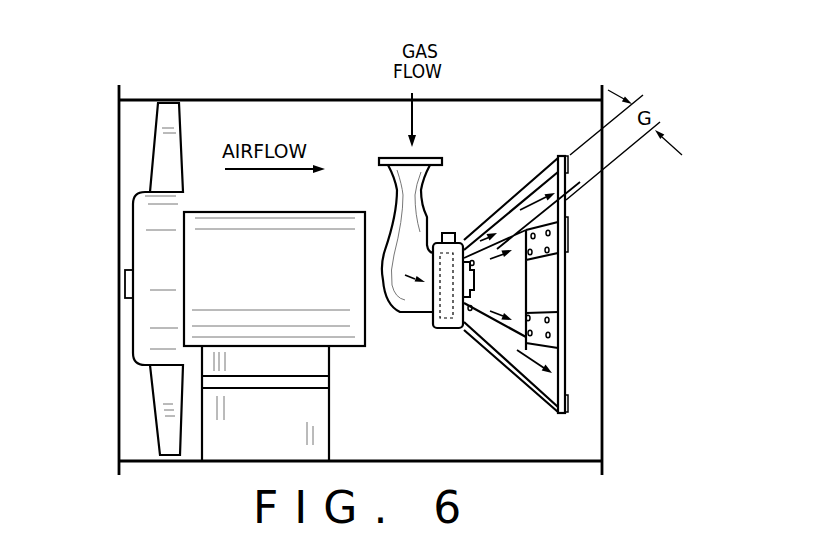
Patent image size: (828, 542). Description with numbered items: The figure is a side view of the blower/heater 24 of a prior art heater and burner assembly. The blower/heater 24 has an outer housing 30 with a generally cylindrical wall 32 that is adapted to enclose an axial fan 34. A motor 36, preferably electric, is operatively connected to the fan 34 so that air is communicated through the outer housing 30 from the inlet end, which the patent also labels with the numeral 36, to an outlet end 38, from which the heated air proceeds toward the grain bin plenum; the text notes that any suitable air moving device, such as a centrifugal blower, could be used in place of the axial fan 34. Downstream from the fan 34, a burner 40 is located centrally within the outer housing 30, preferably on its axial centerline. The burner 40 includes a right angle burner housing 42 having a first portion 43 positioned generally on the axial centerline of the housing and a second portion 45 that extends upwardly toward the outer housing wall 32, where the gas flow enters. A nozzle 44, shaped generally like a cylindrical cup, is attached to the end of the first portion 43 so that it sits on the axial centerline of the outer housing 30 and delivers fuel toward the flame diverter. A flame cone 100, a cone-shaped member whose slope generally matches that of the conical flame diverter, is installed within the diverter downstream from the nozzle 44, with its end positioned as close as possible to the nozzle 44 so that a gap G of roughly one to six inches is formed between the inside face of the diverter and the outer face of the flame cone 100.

The blower/heater 24 is at (240, 85).
The outer housing 30 is at (466, 84).
The cylindrical wall 32 is at (267, 98).
The axial fan 34 is at (170, 165).
The motor 36 is at (236, 248).
The outlet end 38 is at (580, 438).
The burner 40 is at (525, 238).
The right angle burner housing 42 is at (397, 307).
The first portion 43 is at (415, 300).
The nozzle 44 is at (457, 248).
The second portion 45 is at (395, 167).
The flame cone 100 is at (537, 288).